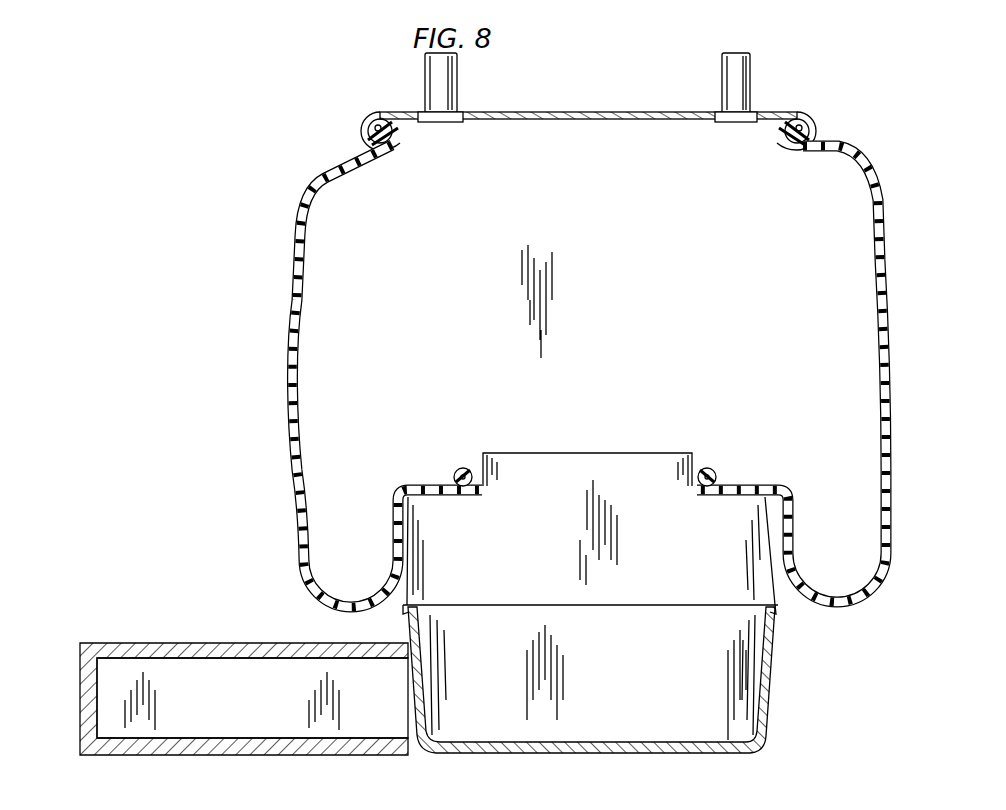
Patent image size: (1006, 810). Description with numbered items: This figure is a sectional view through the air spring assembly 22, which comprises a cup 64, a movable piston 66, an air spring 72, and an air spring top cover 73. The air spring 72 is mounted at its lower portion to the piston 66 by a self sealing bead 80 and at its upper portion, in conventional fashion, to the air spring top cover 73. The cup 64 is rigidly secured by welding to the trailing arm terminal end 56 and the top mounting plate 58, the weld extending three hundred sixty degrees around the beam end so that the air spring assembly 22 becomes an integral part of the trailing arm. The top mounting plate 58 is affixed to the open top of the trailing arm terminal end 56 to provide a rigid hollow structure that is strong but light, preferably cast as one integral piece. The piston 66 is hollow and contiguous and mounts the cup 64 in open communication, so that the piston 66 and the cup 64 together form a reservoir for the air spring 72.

The air spring assembly 22 is at (913, 360).
The trailing arm terminal end 56 is at (197, 687).
The top mounting plate 58 is at (250, 643).
The cup 64 is at (727, 687).
The movable piston 66 is at (450, 538).
The air spring 72 is at (888, 221).
The air spring top cover 73 is at (590, 111).
The self sealing bead 80 is at (463, 469).